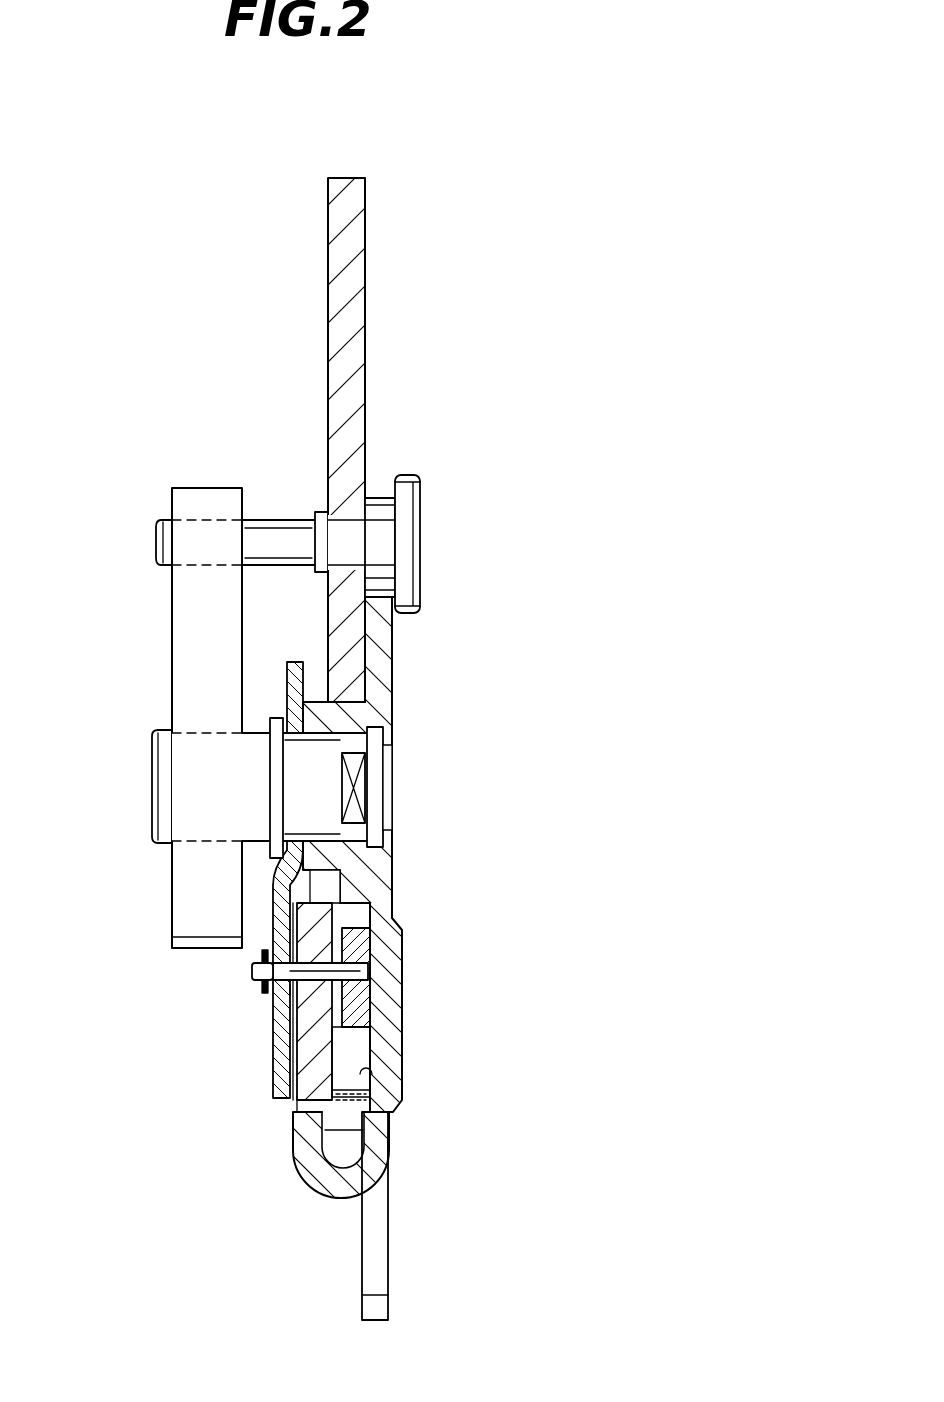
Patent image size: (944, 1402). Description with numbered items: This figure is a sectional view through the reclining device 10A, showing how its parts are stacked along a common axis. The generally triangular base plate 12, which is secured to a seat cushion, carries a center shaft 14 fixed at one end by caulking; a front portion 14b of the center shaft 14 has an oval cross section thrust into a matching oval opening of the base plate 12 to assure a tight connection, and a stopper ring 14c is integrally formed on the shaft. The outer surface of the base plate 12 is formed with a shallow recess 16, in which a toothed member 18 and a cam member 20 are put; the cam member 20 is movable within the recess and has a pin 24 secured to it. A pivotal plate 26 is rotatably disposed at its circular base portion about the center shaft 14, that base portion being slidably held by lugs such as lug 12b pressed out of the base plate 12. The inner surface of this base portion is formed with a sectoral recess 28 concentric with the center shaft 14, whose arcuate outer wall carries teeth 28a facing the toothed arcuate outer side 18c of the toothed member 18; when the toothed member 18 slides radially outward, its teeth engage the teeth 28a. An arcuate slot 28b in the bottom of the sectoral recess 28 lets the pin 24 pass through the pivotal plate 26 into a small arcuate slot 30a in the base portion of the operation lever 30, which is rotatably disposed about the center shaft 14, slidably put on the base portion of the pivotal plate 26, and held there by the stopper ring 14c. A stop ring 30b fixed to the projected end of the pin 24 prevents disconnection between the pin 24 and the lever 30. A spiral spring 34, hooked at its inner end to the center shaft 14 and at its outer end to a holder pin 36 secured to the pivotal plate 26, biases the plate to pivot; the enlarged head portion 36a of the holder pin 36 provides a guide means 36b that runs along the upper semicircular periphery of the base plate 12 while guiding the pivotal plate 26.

The reclining device 10A is at (580, 148).
The base plate 12 is at (385, 677).
The lug 12b is at (322, 1195).
The center shaft 14 is at (155, 775).
The front portion of the center shaft 14b is at (362, 772).
The stopper ring 14c is at (278, 720).
The shallow recess 16 is at (370, 1092).
The toothed member 18 is at (370, 1063).
The toothed arcuate outer side 18c is at (392, 1147).
The cam member 20 is at (365, 1005).
The pin 24 is at (365, 972).
The pivotal plate 26 is at (352, 355).
The sectoral recess 28 is at (370, 1047).
The teeth 28a is at (293, 1097).
The arcuate slot 28b is at (290, 990).
The operation lever 30 is at (272, 1037).
The small arcuate slot 30a is at (250, 968).
The stop ring 30b is at (267, 990).
The spiral spring 34 is at (190, 640).
The holder pin 36 is at (160, 540).
The enlarged head portion 36a is at (405, 538).
The guide means 36b is at (385, 495).